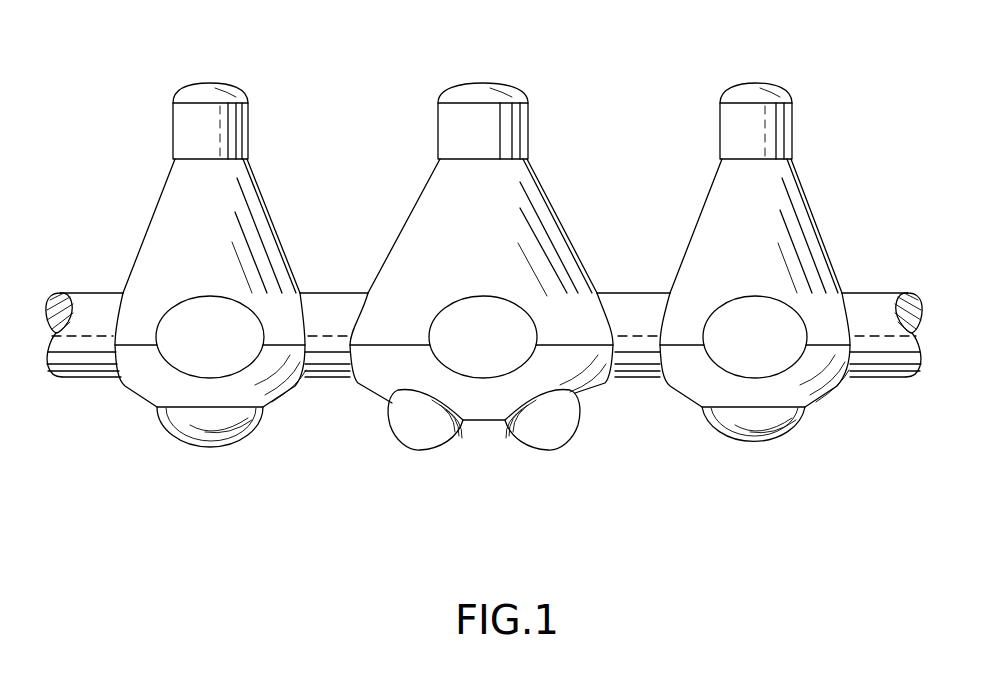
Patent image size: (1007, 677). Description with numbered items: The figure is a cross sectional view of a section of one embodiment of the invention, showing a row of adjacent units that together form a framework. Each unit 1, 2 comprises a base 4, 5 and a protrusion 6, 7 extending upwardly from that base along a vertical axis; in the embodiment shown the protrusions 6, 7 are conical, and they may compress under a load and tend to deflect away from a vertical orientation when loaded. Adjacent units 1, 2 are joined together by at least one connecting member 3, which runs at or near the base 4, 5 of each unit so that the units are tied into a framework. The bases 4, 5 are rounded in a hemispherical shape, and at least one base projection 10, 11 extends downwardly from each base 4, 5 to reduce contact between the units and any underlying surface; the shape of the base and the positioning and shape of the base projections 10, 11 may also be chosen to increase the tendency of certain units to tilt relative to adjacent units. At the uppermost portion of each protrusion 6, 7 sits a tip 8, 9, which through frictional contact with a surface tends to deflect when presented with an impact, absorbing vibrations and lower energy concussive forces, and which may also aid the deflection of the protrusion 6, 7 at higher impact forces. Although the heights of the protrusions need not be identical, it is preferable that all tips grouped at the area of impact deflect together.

The unit 1 is at (702, 60).
The unit 2 is at (428, 60).
The connecting member 3 is at (763, 367).
The base 4 is at (828, 378).
The base 5 is at (580, 385).
The protrusion 6 is at (808, 238).
The protrusion 7 is at (537, 235).
The tip 8 is at (780, 137).
The tip 9 is at (515, 127).
The base projection 10 is at (768, 430).
The base projection 11 is at (530, 447).